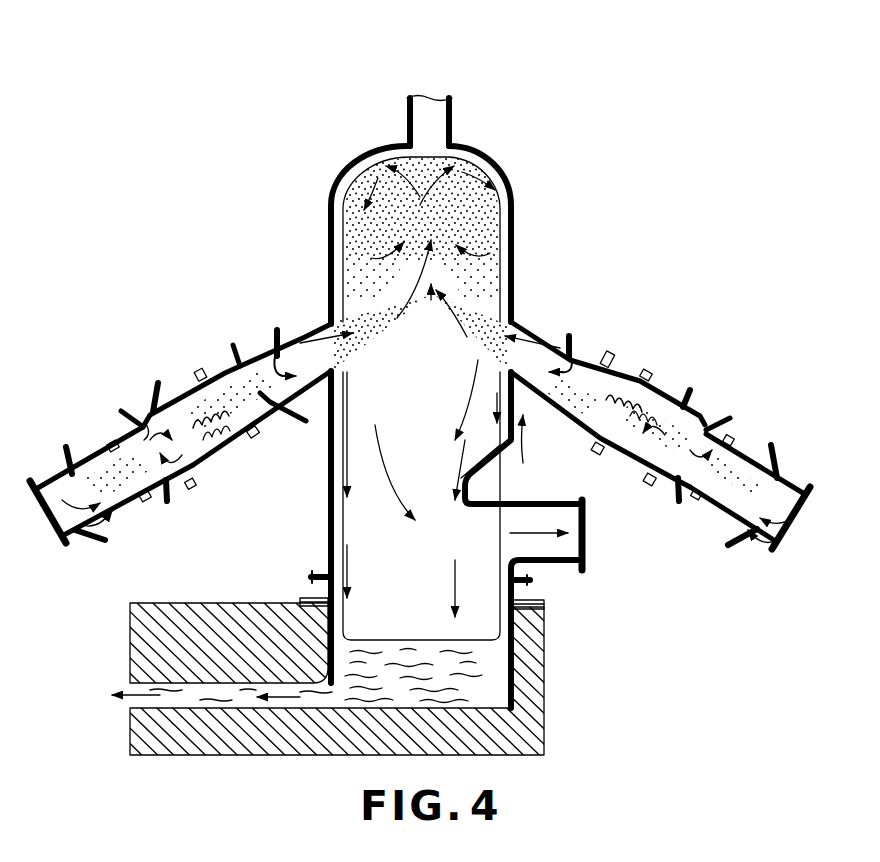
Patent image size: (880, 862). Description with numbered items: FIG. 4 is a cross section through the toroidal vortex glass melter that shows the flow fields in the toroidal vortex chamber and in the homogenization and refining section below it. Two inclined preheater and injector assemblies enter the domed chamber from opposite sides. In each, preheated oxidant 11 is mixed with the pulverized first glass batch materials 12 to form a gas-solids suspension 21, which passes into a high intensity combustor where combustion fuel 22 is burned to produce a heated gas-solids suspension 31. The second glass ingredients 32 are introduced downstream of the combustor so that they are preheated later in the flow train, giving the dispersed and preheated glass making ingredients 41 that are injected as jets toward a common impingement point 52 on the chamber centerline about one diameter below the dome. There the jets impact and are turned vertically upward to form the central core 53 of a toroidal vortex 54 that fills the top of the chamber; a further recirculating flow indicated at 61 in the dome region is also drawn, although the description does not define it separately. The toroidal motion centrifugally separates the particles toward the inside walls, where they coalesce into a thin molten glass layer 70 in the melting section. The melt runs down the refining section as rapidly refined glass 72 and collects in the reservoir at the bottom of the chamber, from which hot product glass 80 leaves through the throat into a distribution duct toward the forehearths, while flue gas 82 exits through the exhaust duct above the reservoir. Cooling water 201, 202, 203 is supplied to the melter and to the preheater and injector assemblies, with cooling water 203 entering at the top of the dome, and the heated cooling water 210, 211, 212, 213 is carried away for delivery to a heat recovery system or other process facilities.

The cooling water 203 is at (431, 93).
The molten glass layer 70 is at (342, 292).
The recirculating gas flow 61 is at (388, 185).
The toroidal vortex 54 is at (433, 212).
The central core 53 is at (418, 228).
The impingement point 52 is at (436, 278).
The preheated glass making ingredients 41 is at (348, 336).
The cooling water 201 is at (152, 378).
The cooling water 202 is at (241, 342).
The oxidant 11 is at (60, 509).
The first glass batch materials 12 is at (70, 446).
The combustion fuel 22 is at (128, 420).
The second glass ingredients 32 is at (277, 331).
The heated cooling water 213 is at (293, 425).
The heated cooling water 212 is at (200, 485).
The heated gas-solids suspension 31 is at (607, 382).
The gas-solids suspension 21 is at (728, 466).
The flue gas 82 is at (558, 535).
The heated cooling water 211 is at (534, 584).
The heated cooling water 210 is at (302, 577).
The hot product glass 80 is at (233, 697).
The refined glass 72 is at (338, 638).